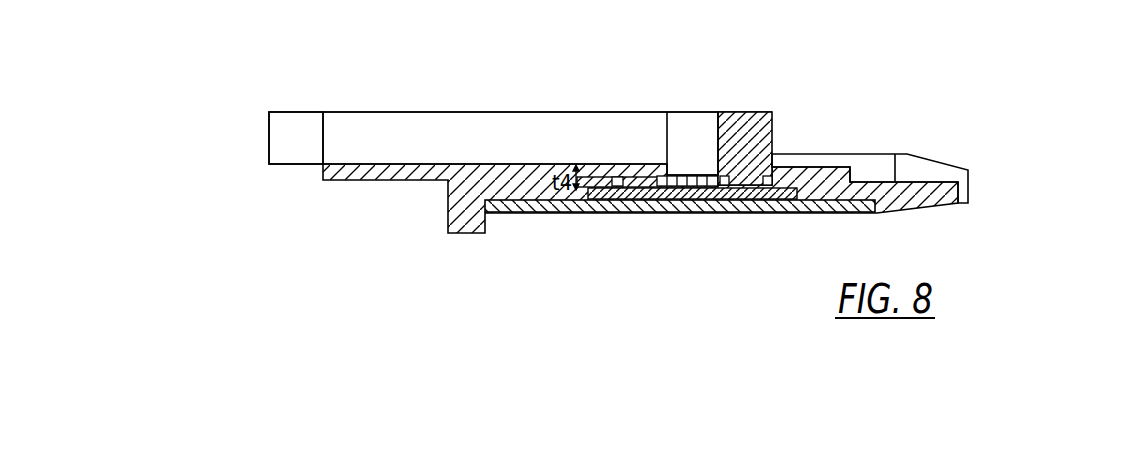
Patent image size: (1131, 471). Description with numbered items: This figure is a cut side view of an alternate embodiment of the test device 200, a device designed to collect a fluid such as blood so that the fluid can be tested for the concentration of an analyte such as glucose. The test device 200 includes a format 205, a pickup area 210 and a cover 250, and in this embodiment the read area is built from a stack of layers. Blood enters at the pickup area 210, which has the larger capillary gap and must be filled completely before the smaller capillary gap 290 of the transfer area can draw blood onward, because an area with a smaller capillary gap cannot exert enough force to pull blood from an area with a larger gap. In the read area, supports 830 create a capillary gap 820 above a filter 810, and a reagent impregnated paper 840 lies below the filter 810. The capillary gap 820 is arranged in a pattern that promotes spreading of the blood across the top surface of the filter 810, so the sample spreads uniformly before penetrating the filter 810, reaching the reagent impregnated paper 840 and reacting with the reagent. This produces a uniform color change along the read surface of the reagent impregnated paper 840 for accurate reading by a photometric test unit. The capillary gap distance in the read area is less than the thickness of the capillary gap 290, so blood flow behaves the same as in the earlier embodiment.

The test device 200 is at (1006, 90).
The format 205 is at (927, 170).
The pickup area 210 is at (390, 122).
The cover 250 is at (537, 205).
The second capillary gap 290 is at (688, 140).
The filter 810 is at (687, 203).
The capillary gap 820 is at (765, 114).
The supports 830 is at (637, 173).
The reagent impregnated paper 840 is at (615, 199).